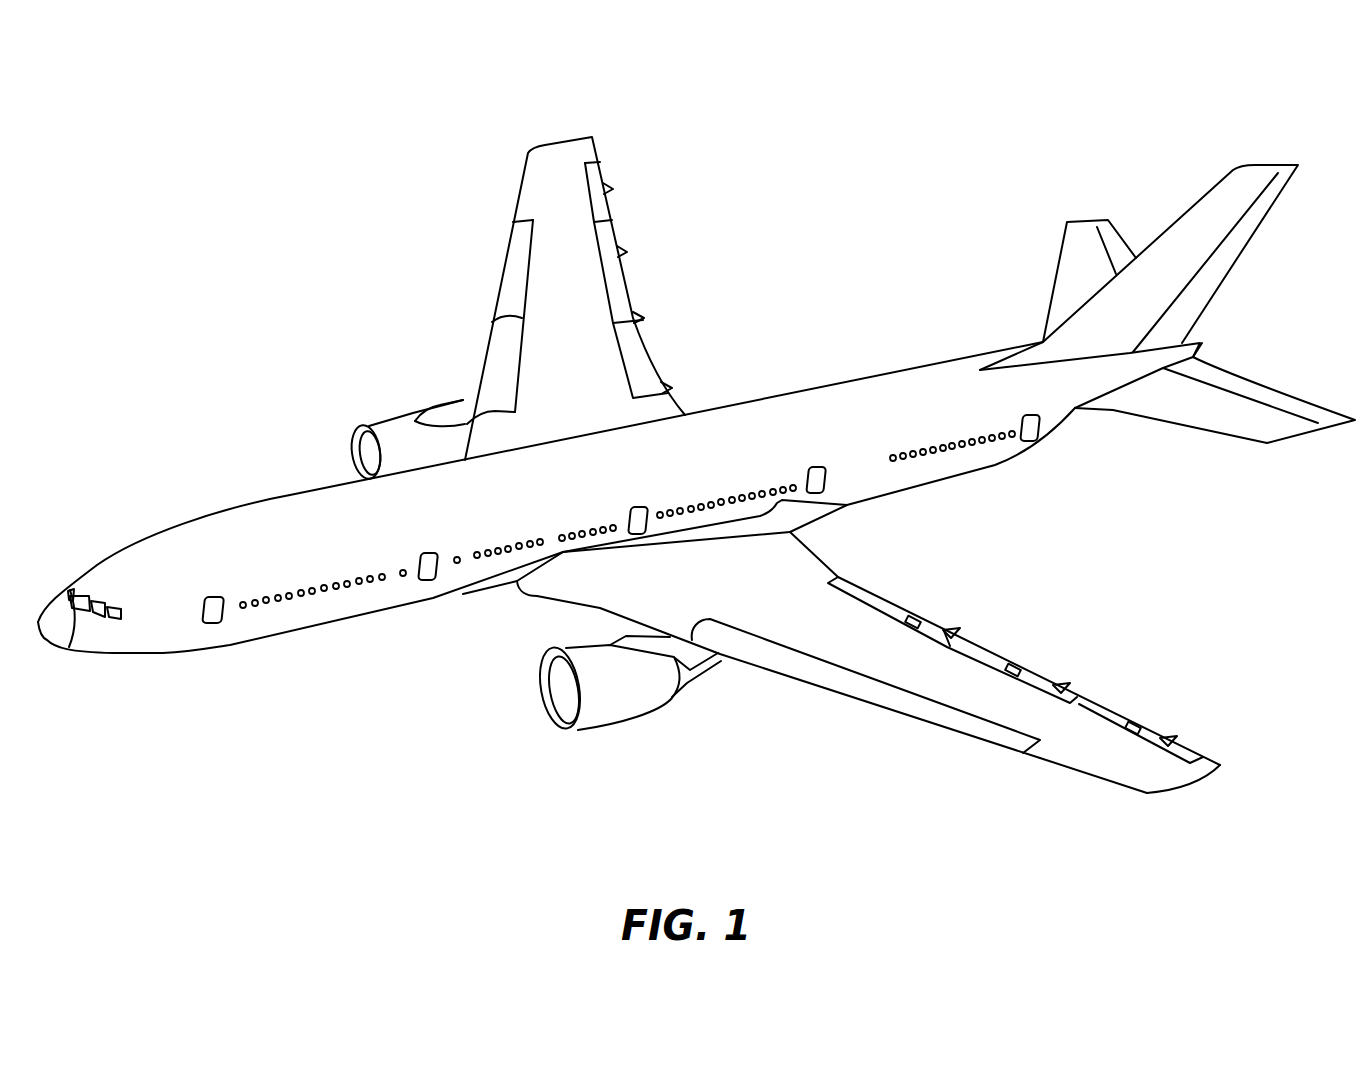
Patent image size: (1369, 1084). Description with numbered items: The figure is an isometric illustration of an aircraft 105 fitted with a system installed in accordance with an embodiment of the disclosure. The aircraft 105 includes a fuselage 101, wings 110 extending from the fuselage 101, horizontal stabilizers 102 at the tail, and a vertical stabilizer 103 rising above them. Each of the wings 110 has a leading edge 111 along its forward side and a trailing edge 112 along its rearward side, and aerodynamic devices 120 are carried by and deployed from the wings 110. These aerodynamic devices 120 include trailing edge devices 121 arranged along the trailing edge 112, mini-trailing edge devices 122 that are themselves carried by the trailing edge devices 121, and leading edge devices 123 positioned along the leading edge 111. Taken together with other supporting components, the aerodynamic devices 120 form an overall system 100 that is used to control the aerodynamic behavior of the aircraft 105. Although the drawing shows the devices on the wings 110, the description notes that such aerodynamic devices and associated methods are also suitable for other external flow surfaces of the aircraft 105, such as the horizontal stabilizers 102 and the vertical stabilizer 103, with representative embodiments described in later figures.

The system 100 is at (1033, 545).
The fuselage 101 is at (242, 512).
The horizontal stabilizers 102 is at (1073, 228).
The vertical stabilizer 103 is at (1217, 180).
The aircraft 105 is at (365, 687).
The wings 110 is at (564, 155).
The leading edge 111 is at (1090, 777).
The trailing edge 112 is at (1225, 766).
The aerodynamic devices 120 is at (1157, 684).
The trailing edge devices 121 is at (642, 358).
The mini-trailing edge devices 122 is at (923, 612).
The leading edge devices 123 is at (950, 722).